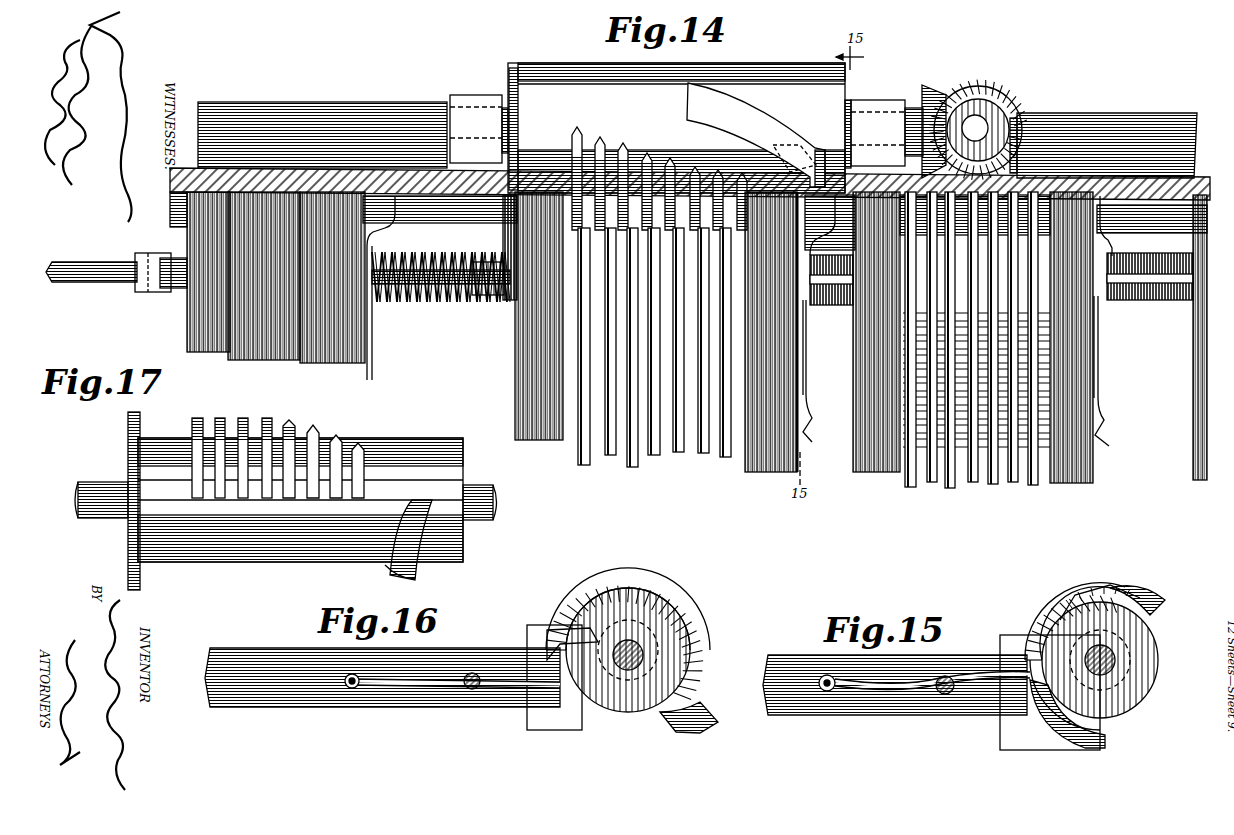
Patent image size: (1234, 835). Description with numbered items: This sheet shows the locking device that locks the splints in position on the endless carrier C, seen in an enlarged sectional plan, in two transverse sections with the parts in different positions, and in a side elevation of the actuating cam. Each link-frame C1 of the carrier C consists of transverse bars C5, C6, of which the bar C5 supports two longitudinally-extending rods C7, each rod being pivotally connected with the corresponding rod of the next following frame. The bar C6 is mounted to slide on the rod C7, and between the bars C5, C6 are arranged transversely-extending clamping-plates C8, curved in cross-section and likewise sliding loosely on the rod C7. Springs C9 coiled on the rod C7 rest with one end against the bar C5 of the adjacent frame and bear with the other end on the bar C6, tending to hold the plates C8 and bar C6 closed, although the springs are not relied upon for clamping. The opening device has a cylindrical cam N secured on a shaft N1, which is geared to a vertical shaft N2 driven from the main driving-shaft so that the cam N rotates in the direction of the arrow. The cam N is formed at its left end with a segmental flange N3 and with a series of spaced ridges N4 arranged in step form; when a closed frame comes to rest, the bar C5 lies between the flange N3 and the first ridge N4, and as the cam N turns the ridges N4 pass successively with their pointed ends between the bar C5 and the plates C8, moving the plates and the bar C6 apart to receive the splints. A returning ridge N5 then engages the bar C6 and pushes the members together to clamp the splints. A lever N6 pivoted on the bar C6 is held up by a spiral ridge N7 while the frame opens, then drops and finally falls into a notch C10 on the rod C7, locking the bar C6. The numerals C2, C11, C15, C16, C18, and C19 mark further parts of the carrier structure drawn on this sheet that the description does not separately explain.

In FIG. 14, the cylindrical cam N is at (553, 46).
In FIG. 17, the cylindrical cam N is at (262, 556).
In FIG. 16, the cylindrical cam N is at (578, 590).
In FIG. 15, the cylindrical cam N is at (1120, 702).
In FIG. 14, the shaft N1 is at (853, 106).
In FIG. 17, the shaft N1 is at (98, 490).
In FIG. 16, the shaft N1 is at (628, 672).
In FIG. 15, the shaft N1 is at (1116, 658).
In FIG. 14, the vertical shaft N2 is at (982, 128).
In FIG. 14, the segmental flange N3 is at (516, 136).
In FIG. 17, the segmental flange N3 is at (128, 428).
In FIG. 16, the segmental flange N3 is at (690, 730).
In FIG. 15, the segmental flange N3 is at (1152, 606).
In FIG. 14, the spaced ridges N4 is at (576, 133).
In FIG. 17, the spaced ridges N4 is at (264, 418).
In FIG. 16, the spaced ridges N4 is at (700, 605).
In FIG. 15, the spaced ridges N4 is at (1071, 627).
In FIG. 14, the returning ridge N5 is at (818, 150).
In FIG. 17, the returning ridge N5 is at (420, 516).
In FIG. 16, the returning ridge N5 is at (568, 628).
In FIG. 15, the returning ridge N5 is at (926, 678).
In FIG. 14, the lever N6 is at (1110, 250).
In FIG. 16, the lever N6 is at (505, 668).
In FIG. 14, the spiral ridge N7 is at (756, 122).
In FIG. 16, the spiral ridge N7 is at (698, 692).
In FIG. 15, the spiral ridge N7 is at (1124, 600).
In FIG. 14, the carrier C is at (510, 347).
In FIG. 16, the carrier C is at (382, 687).
In FIG. 15, the carrier C is at (895, 697).
In FIG. 14, the link-frame C1 is at (763, 288).
In FIG. 16, the link-frame C1 is at (682, 568).
In FIG. 15, the link-frame C1 is at (1090, 558).
In FIG. 14, the bracket C2 is at (523, 316).
In FIG. 16, the bracket C2 is at (548, 730).
In FIG. 15, the bracket C2 is at (1040, 620).
In FIG. 14, the transverse bar C5 is at (195, 334).
In FIG. 15, the transverse bar C5 is at (904, 700).
In FIG. 14, the transverse bar C6 is at (345, 365).
In FIG. 16, the transverse bar C6 is at (390, 692).
In FIG. 14, the longitudinally-extending rod C7 is at (58, 262).
In FIG. 16, the longitudinally-extending rod C7 is at (472, 690).
In FIG. 15, the longitudinally-extending rod C7 is at (945, 696).
In FIG. 14, the clamping-plate C8 is at (270, 362).
In FIG. 14, the spring C9 is at (462, 300).
In FIG. 14, the notch C10 is at (100, 262).
In FIG. 14, the wire C11 is at (1104, 440).
In FIG. 14, the slat C15 is at (516, 412).
In FIG. 14, the slat C16 is at (1076, 484).
In FIG. 14, the grid rods C18 is at (978, 486).
In FIG. 14, the spring C19 is at (1165, 337).